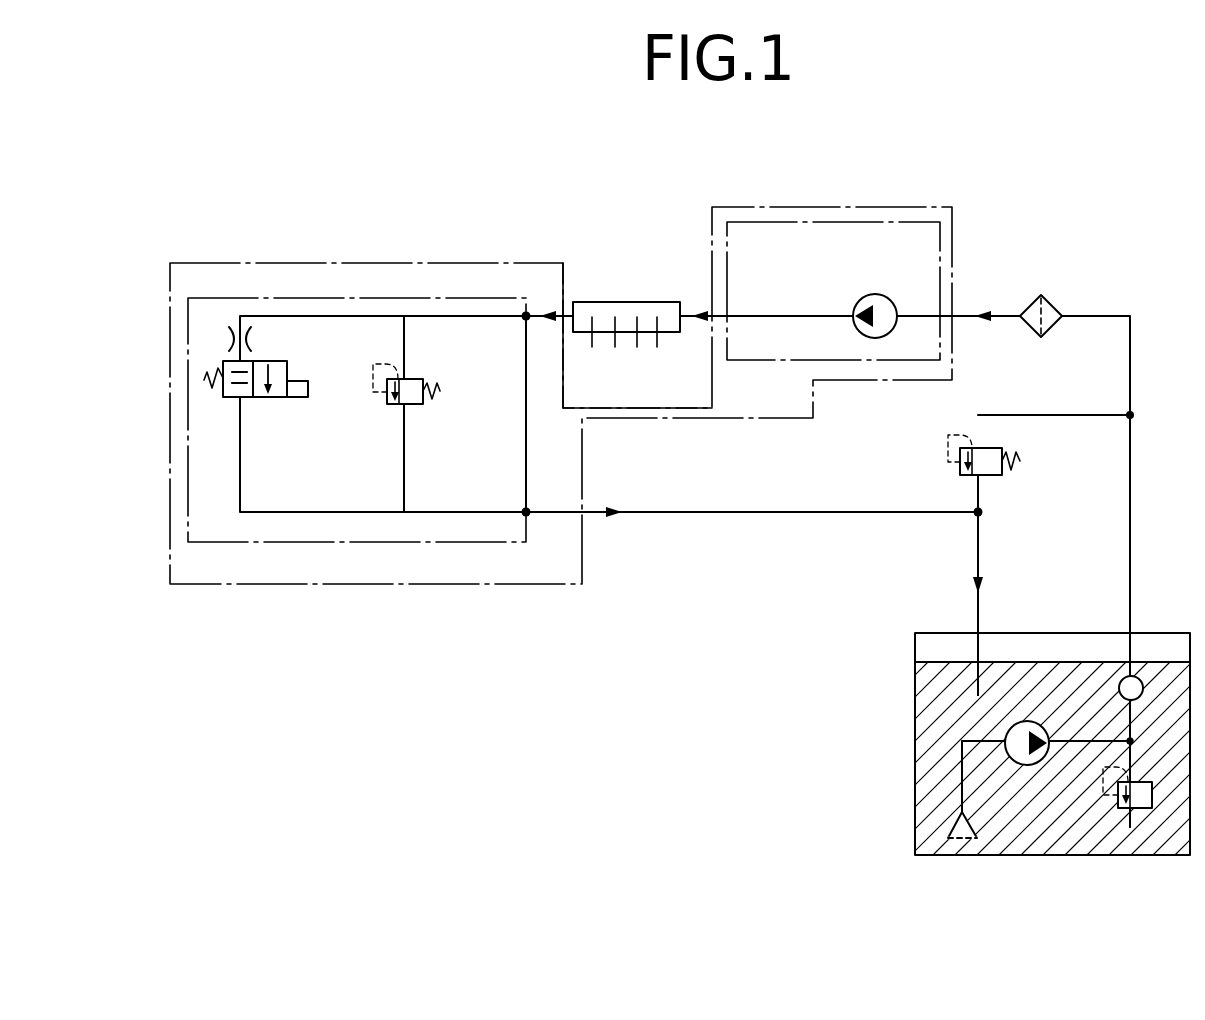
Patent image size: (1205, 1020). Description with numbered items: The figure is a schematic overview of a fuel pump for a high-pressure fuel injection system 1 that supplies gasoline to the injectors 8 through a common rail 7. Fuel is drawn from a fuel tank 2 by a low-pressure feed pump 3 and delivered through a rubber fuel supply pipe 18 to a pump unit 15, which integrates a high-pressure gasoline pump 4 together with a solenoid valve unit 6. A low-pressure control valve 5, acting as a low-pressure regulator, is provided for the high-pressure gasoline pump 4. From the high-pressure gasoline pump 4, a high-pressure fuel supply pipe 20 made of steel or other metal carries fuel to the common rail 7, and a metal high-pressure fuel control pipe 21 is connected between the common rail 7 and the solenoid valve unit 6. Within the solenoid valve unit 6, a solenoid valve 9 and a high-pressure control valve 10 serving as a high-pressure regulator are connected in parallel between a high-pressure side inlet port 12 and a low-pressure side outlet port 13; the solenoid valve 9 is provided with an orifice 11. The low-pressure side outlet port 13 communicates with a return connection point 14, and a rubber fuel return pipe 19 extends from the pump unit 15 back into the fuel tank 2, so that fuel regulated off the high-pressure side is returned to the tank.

The fuel pump for a high-pressure fuel injection system 1 is at (808, 183).
The fuel tank 2 is at (915, 752).
The low-pressure feed pump 3 is at (1020, 765).
The high-pressure gasoline pump 4 is at (871, 296).
The low-pressure control valve 5 is at (993, 476).
The solenoid valve unit 6 is at (407, 297).
The common rail 7 is at (632, 302).
The injectors 8 is at (657, 340).
The solenoid valve 9 is at (277, 398).
The high-pressure control valve 10 is at (411, 403).
The orifice 11 is at (233, 345).
The high-pressure side inlet port 12 is at (522, 318).
The low-pressure side outlet port 13 is at (530, 515).
The return connection point 14 is at (975, 514).
The pump unit 15 is at (912, 206).
The fuel supply pipe 18 is at (1133, 558).
The fuel return pipe 19 is at (978, 613).
The high-pressure fuel supply pipe 20 is at (690, 316).
The high-pressure fuel control pipe 21 is at (568, 302).